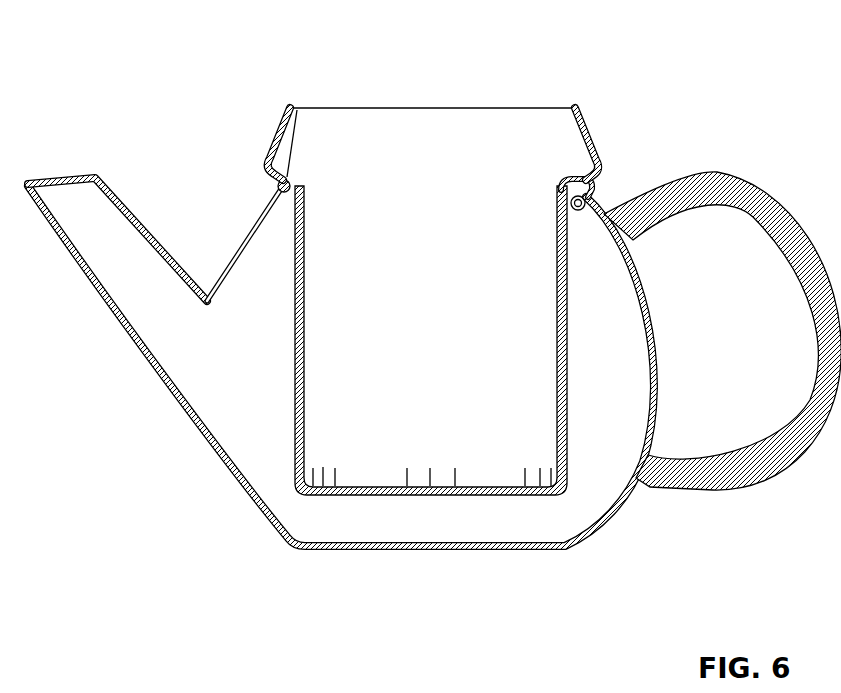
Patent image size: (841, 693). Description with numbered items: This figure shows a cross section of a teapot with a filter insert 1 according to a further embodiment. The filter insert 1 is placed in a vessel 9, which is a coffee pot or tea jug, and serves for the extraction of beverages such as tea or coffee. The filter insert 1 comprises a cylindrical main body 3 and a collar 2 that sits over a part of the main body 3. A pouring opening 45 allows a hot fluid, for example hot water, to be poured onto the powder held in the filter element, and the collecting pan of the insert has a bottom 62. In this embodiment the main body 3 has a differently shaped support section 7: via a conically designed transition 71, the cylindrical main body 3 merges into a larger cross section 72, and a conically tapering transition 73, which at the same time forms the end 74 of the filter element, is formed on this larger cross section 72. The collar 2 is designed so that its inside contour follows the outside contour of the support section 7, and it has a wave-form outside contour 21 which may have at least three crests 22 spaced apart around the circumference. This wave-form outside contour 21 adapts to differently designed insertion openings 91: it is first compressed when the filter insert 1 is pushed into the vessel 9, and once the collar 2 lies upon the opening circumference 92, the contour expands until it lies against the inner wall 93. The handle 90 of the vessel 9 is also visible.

The filter insert 1 is at (276, 426).
The collar 2 is at (598, 190).
The main body 3 is at (282, 310).
The support section 7 is at (612, 160).
The vessel 9 is at (590, 523).
The wave-form outside contour 21 is at (600, 184).
The crests 22 is at (572, 216).
The pouring opening 45 is at (402, 100).
The bottom 62 is at (378, 497).
The conically designed transition 71 is at (288, 180).
The larger cross section 72 is at (267, 160).
The conically tapering transition 73 is at (280, 126).
The end of the filter element 74 is at (288, 110).
The handle 90 is at (757, 470).
The insertion opening 91 is at (281, 196).
The opening circumference 92 is at (280, 186).
The inner wall 93 is at (647, 273).